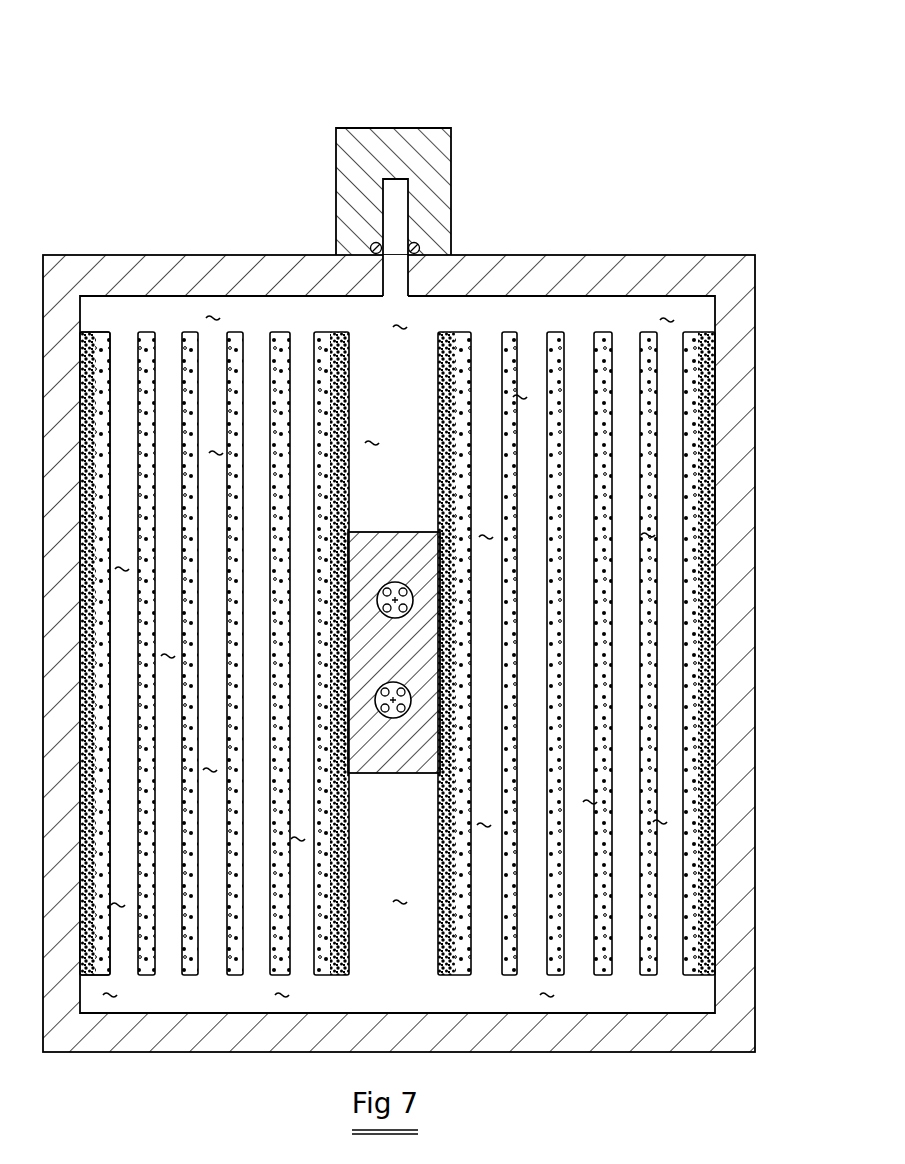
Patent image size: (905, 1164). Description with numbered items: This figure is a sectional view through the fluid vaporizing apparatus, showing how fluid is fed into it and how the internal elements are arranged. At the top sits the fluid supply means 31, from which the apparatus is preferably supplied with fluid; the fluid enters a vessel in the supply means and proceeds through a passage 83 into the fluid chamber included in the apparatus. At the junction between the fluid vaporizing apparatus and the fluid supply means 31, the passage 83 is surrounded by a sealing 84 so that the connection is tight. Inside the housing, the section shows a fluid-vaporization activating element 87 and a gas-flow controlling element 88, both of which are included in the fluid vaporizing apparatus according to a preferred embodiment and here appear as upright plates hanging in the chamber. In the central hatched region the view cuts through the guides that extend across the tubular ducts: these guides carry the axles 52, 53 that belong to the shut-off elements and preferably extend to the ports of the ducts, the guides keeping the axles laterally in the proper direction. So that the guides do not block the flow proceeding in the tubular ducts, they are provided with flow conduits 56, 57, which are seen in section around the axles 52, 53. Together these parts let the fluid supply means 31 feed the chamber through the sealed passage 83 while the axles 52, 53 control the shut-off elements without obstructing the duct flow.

The fluid supply means 31 is at (420, 126).
The passage 83 is at (402, 280).
The sealing 84 is at (417, 243).
The gas-flow controlling element 88 is at (85, 337).
The fluid-vaporization activating element 87 is at (150, 337).
The axle 53 is at (403, 585).
The flow conduit 57 is at (386, 585).
The flow conduit 56 is at (400, 716).
The axle 52 is at (388, 716).